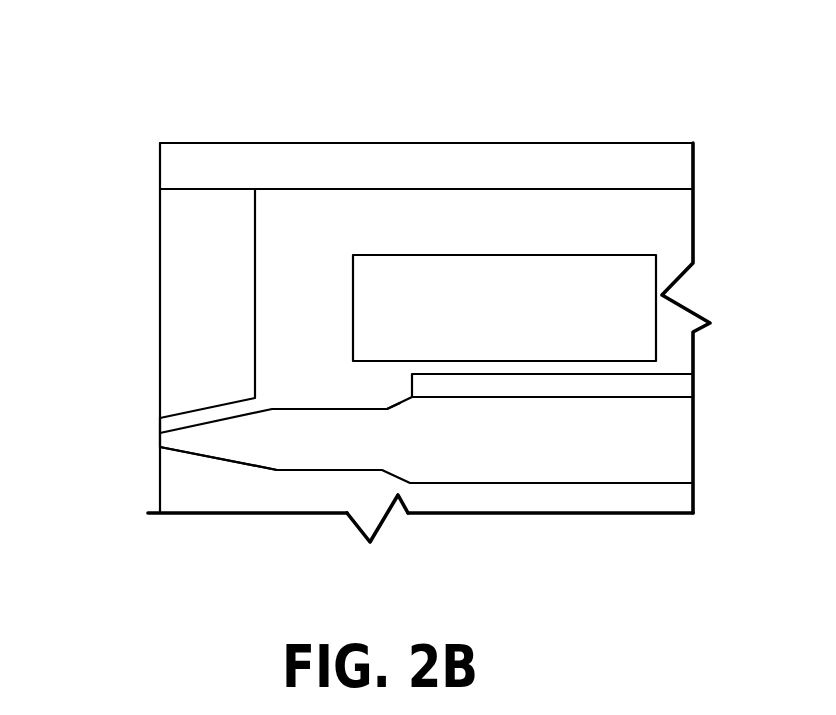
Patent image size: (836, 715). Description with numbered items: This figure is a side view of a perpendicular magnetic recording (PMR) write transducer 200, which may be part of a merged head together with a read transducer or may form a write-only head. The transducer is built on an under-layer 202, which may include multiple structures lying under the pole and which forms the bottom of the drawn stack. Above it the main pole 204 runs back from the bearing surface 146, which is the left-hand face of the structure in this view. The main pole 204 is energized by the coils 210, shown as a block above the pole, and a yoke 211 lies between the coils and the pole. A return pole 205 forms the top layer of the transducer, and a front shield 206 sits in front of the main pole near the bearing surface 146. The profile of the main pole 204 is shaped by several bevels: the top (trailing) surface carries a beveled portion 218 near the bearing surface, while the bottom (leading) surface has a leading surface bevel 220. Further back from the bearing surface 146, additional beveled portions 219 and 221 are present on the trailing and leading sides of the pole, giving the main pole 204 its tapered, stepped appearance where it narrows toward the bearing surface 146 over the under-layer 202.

The PMR transducer 200 is at (455, 103).
The bearing surface 146 is at (160, 162).
The return pole 205 is at (426, 172).
The front shield 206 is at (185, 283).
The coils 210 is at (504, 308).
The yoke 211 is at (658, 385).
The main pole 204 is at (426, 440).
The beveled portion 219 is at (390, 407).
The beveled portion 218 is at (202, 422).
The leading surface bevel 220 is at (193, 455).
The under-layer 202 is at (245, 483).
The beveled portion 221 is at (390, 475).